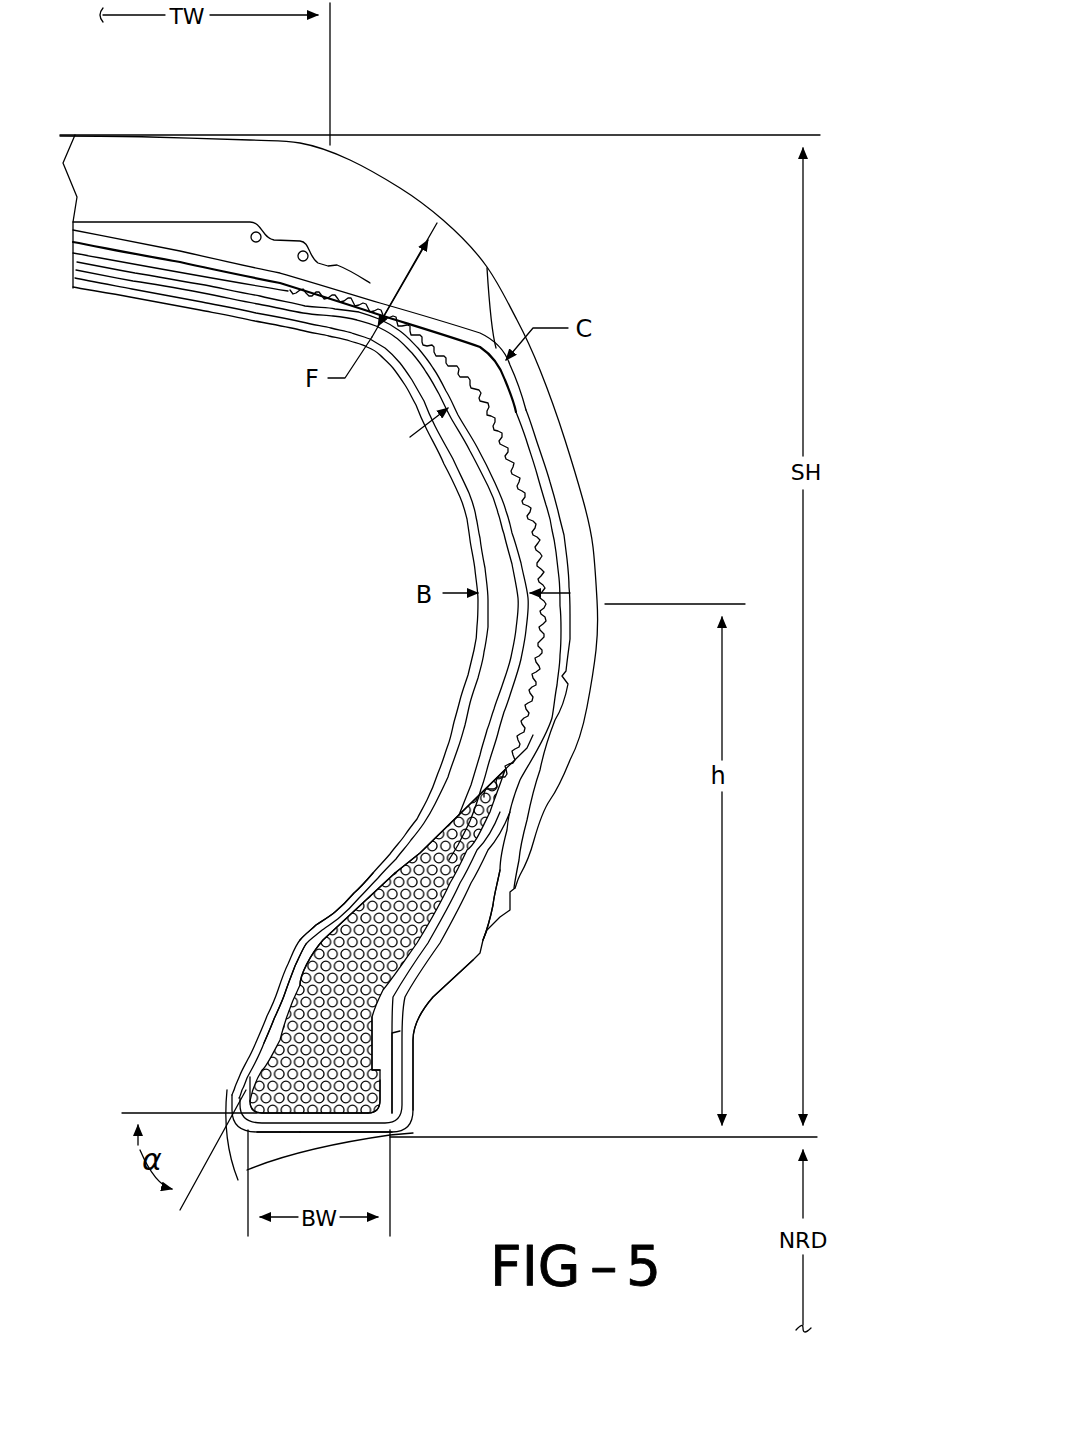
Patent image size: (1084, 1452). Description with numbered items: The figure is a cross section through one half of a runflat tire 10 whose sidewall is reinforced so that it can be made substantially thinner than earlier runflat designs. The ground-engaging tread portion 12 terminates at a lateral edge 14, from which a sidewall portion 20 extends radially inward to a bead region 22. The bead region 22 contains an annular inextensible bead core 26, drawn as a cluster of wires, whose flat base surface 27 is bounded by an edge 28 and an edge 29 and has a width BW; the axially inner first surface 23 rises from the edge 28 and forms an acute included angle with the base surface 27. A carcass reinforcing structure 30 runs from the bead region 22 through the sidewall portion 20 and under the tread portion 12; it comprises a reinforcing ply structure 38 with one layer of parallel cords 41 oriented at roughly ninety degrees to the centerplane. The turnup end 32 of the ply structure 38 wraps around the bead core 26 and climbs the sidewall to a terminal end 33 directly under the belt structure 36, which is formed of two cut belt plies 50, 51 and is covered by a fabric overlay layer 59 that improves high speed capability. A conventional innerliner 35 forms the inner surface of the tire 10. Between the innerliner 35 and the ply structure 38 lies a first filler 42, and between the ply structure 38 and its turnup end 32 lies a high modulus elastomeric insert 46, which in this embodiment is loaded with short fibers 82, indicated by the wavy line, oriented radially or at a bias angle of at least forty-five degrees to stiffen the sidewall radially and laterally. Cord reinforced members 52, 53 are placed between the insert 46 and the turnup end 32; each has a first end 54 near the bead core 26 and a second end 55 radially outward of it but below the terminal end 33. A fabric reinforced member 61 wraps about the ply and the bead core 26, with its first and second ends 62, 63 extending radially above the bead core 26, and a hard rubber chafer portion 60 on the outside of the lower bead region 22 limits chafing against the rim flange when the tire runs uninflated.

The tire 10 is at (375, 96).
The tread portion 12 is at (90, 212).
The lateral edge 14 is at (345, 150).
The sidewall portion 20 is at (593, 547).
The bead region 22 is at (327, 1000).
The axially inner first surface 23 is at (250, 1073).
The bead core 26 is at (292, 1058).
The flat base surface 27 is at (350, 1113).
The edge 28 is at (273, 1113).
The edge 29 is at (380, 1098).
The carcass reinforcing structure 30 is at (167, 295).
The turnup end 32 is at (530, 447).
The terminal end 33 is at (118, 270).
The innerliner 35 is at (353, 905).
The belt structure 36 is at (160, 224).
The reinforcing ply structure 38 is at (490, 460).
The cords 41 is at (515, 533).
The first filler 42 is at (500, 563).
The elastomeric insert 46 is at (540, 507).
The belt ply 50 is at (292, 255).
The belt ply 51 is at (232, 264).
The cord reinforced member 52 is at (430, 937).
The cord reinforced member 53 is at (443, 908).
The first end 54 is at (373, 1063).
The second end 55 is at (460, 883).
The fabric overlay layer 59 is at (237, 252).
The hard rubber chafer portion 60 is at (433, 1000).
The fabric reinforced member 61 is at (272, 1013).
The first end 62 is at (322, 950).
The second end 63 is at (395, 1033).
The short fibers 82 is at (433, 353).